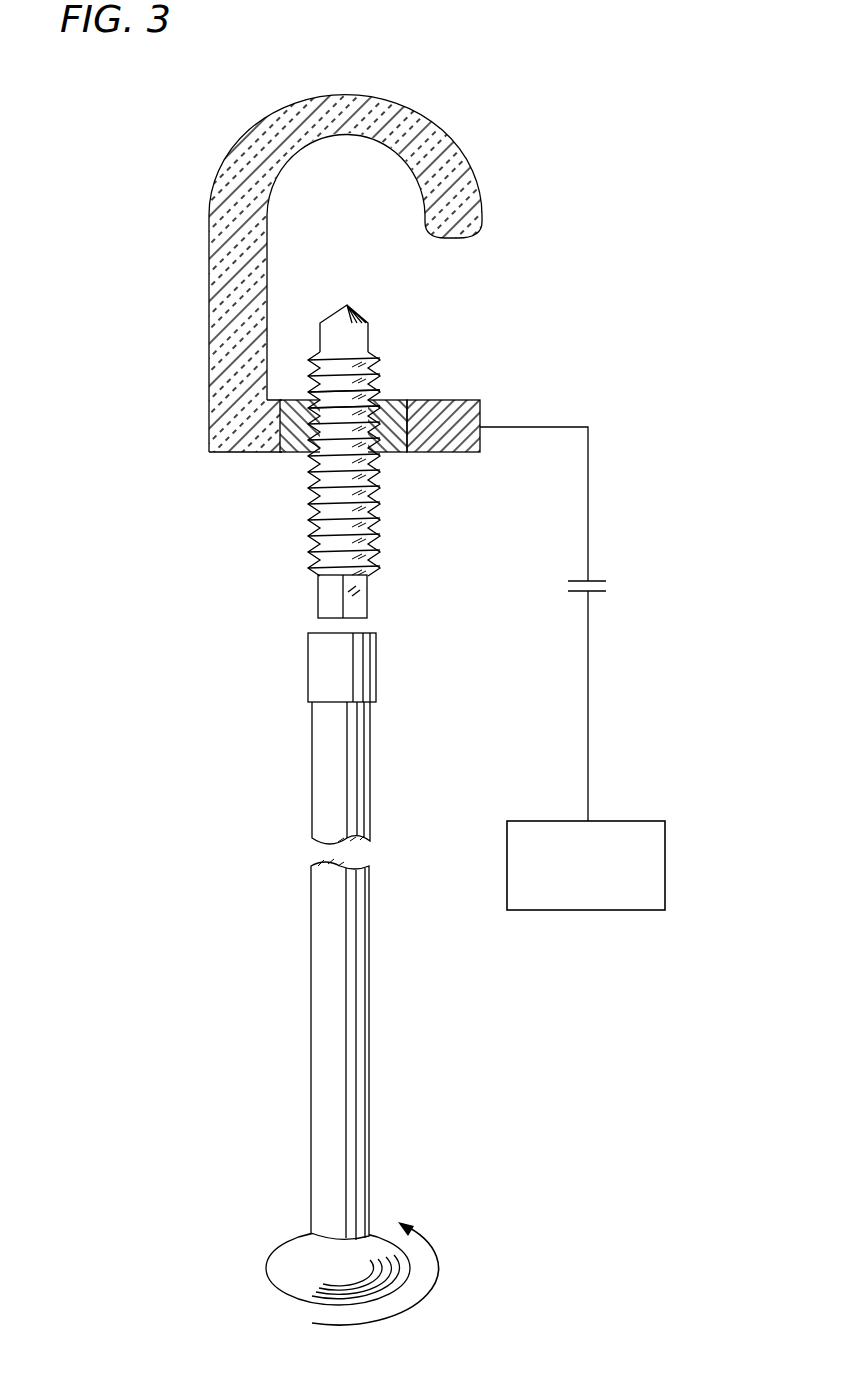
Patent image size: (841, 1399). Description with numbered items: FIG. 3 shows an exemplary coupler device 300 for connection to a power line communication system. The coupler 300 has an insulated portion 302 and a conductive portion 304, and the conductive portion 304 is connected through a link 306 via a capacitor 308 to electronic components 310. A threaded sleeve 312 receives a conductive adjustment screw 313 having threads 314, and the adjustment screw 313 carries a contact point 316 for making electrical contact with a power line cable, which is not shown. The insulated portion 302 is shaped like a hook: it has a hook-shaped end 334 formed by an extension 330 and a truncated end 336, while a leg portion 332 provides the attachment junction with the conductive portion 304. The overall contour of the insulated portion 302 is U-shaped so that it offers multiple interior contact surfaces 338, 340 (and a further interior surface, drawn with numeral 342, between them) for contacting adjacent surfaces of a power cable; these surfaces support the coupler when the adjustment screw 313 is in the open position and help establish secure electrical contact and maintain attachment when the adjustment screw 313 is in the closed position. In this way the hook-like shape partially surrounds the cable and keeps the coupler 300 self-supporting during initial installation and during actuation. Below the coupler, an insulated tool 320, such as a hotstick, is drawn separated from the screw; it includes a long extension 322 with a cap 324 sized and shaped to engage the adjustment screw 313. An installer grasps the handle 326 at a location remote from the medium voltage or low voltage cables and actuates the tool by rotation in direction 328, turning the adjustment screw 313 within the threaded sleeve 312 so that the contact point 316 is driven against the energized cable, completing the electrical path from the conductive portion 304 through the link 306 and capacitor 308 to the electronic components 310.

The coupler device 300 is at (182, 136).
The insulated portion 302 is at (209, 211).
The conductive portion 304 is at (466, 400).
The link 306 is at (590, 460).
The capacitor 308 is at (605, 591).
The electronic components 310 is at (585, 912).
The threaded sleeve 312 is at (296, 400).
The adjustment screw 313 is at (293, 545).
The threads 314 is at (385, 486).
The contact point 316 is at (348, 305).
The insulated tool 320 is at (300, 974).
The long extension 322 is at (371, 811).
The cap 324 is at (377, 666).
The handle 326 is at (265, 1258).
The direction of rotation 328 is at (437, 1268).
The extension 330 is at (232, 306).
The leg portion 332 is at (262, 428).
The hook-shaped end 334 is at (346, 95).
The truncated end 336 is at (462, 233).
The interior contact surface 338 is at (277, 165).
The interior contact surface 340 is at (419, 177).
The inner top surface 342 is at (345, 133).